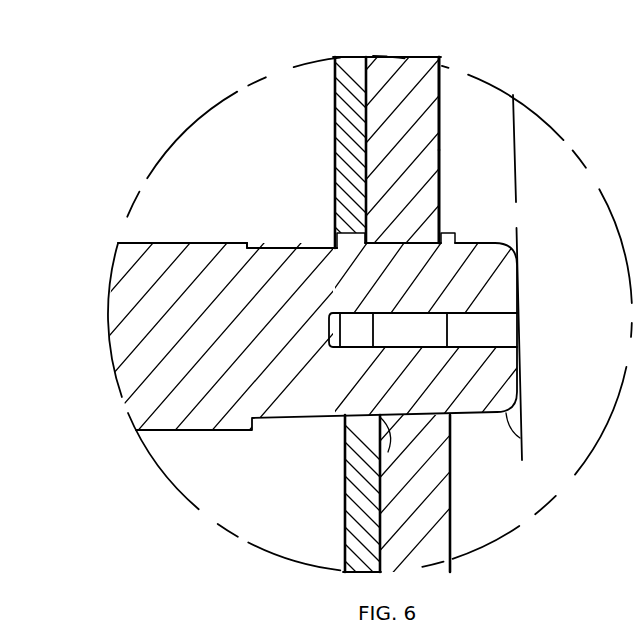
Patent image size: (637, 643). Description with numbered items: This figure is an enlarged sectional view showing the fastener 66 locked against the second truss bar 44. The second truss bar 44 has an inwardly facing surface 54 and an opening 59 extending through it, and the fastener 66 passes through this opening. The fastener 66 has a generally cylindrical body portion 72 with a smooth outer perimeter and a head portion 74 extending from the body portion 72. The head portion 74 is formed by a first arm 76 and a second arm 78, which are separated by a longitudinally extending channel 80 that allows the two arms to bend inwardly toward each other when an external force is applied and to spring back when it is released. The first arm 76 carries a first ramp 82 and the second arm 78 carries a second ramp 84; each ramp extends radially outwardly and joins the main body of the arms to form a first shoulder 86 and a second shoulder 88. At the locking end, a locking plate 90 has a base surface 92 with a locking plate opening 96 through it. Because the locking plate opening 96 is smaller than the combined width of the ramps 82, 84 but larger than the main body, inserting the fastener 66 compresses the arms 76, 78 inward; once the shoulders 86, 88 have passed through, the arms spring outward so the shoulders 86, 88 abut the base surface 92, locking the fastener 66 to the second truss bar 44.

The second truss bar 44 is at (330, 96).
The inwardly facing surface 54 is at (334, 147).
The opening 59 is at (334, 238).
The fastener 66 is at (157, 348).
The body portion 72 is at (203, 243).
The head portion 74 is at (272, 245).
The first arm 76 is at (490, 373).
The second arm 78 is at (487, 281).
The channel 80 is at (507, 317).
The first ramp 82 is at (522, 441).
The second ramp 84 is at (473, 243).
The first shoulder 86 is at (452, 458).
The second shoulder 88 is at (511, 120).
The locking plate 90 is at (443, 91).
The base surface 92 is at (432, 136).
The locking plate opening 96 is at (378, 450).